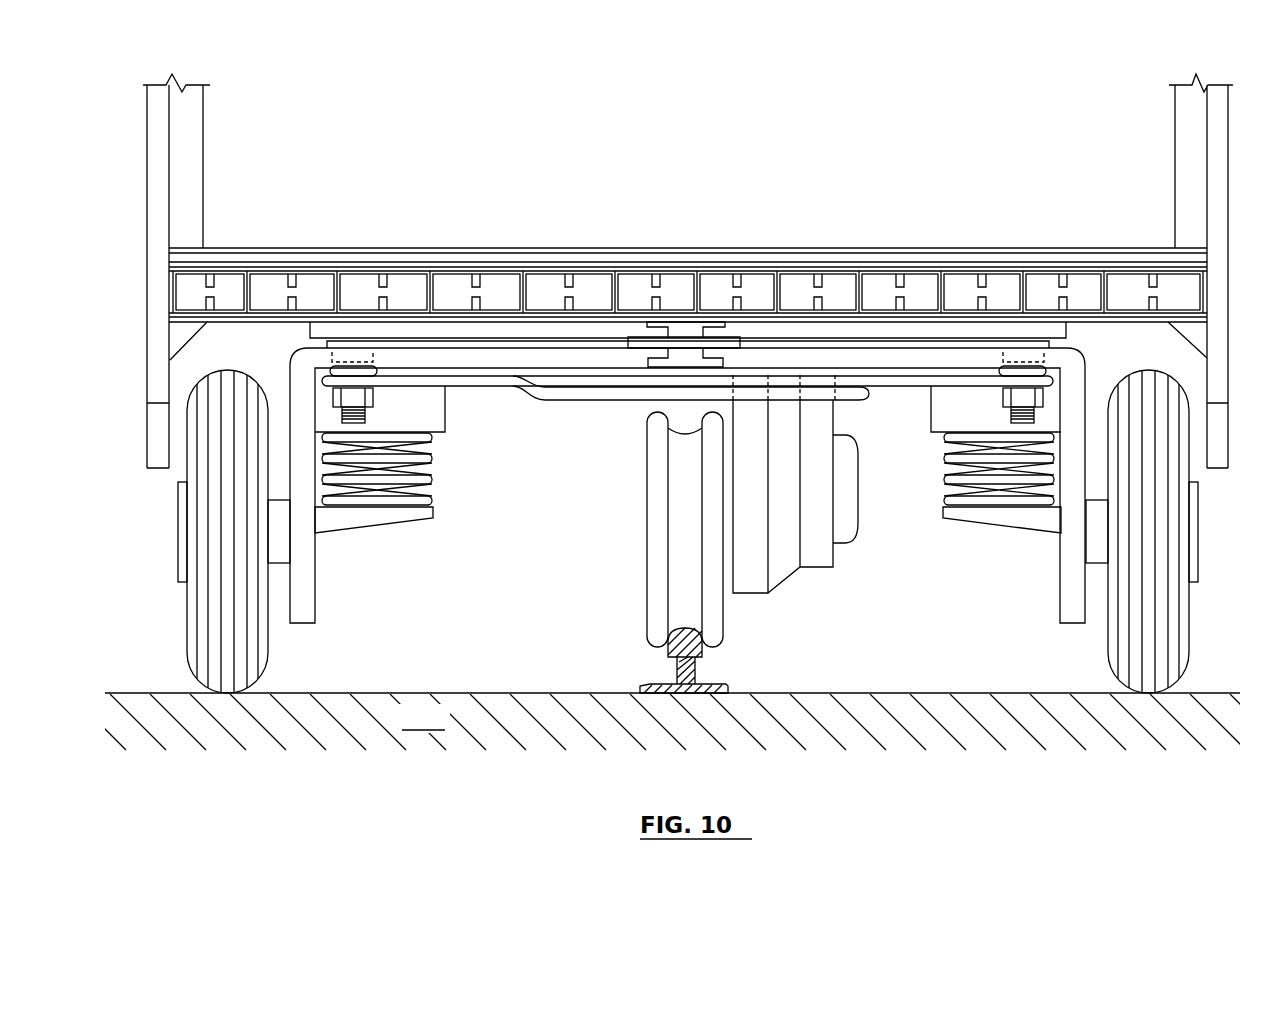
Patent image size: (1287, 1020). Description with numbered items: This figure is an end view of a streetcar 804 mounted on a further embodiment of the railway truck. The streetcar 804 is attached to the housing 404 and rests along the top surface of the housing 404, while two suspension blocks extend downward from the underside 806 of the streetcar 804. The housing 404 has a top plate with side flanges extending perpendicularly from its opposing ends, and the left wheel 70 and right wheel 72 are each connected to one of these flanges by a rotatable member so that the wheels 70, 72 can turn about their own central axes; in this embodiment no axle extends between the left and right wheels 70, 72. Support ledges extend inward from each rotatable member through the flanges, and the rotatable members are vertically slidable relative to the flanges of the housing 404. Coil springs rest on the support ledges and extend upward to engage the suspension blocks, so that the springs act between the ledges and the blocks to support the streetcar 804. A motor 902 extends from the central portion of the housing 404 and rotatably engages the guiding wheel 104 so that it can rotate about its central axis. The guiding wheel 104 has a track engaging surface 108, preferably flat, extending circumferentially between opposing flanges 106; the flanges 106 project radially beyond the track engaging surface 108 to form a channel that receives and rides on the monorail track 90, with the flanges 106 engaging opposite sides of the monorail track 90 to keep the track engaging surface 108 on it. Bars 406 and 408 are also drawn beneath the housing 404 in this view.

The streetcar 804 is at (911, 228).
The bottom surface 806 is at (259, 323).
The second housing 404 is at (1070, 355).
The bar 406 is at (542, 392).
The strap 408 is at (882, 387).
The left wheel 70 is at (268, 654).
The right wheel 72 is at (1113, 682).
The guiding wheel 104 is at (647, 578).
The flanges 106 is at (658, 622).
The track engaging surface 108 is at (683, 624).
The monorail track 90 is at (720, 673).
The motor 902 is at (817, 550).